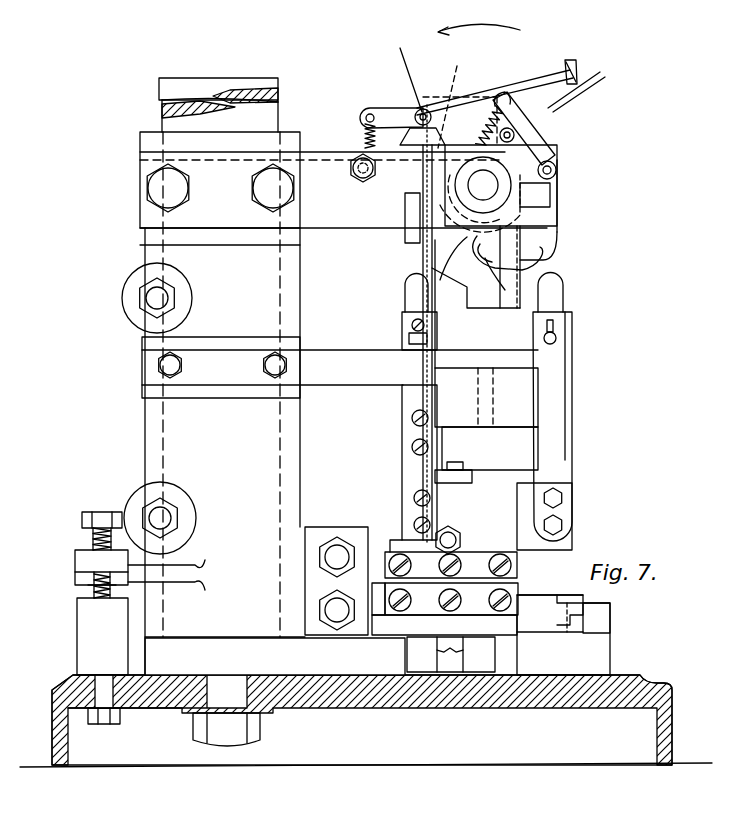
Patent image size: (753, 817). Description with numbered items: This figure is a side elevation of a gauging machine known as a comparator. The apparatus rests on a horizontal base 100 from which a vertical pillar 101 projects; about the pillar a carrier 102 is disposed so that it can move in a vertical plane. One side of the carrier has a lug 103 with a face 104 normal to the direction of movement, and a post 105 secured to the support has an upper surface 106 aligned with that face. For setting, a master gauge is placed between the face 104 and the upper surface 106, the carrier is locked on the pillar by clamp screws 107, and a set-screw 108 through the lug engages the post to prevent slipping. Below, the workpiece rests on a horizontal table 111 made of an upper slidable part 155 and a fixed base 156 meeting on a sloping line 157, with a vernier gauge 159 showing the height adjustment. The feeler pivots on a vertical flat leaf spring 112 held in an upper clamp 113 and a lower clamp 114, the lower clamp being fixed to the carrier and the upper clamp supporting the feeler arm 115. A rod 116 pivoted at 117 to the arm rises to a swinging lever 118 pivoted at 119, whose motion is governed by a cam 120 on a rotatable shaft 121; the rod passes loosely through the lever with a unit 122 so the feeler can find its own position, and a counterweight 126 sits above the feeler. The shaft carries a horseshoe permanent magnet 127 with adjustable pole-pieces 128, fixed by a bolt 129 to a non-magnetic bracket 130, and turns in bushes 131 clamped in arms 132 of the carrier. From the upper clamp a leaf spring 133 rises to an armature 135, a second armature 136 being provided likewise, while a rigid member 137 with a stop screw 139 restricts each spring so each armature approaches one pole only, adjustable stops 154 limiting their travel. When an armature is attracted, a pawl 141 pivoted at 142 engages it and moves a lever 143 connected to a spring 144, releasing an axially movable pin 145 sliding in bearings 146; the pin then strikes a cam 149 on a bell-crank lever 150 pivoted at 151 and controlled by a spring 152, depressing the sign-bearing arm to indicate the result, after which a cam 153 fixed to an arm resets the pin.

The horizontal base 100 is at (646, 680).
The vertical pillar 101 is at (279, 704).
The carrier 102 is at (172, 428).
The lug 103 is at (88, 560).
The face 104 is at (80, 587).
The post 105 is at (102, 646).
The upper surface 106 is at (90, 598).
The clamp screws 107 is at (152, 298).
The set-screw 108 is at (102, 512).
The horizontal table 111 is at (552, 598).
The flat leaf spring 112 is at (482, 580).
The clamp 113 is at (522, 555).
The clamp 114 is at (487, 612).
The arm 115 is at (462, 528).
The rod 116 is at (422, 272).
The pivot 117 is at (398, 540).
The swinging lever 118 is at (470, 140).
The pivot 119 is at (358, 182).
The cam 120 is at (516, 134).
The rotatable shaft 121 is at (484, 185).
The unit 122 is at (460, 95).
The counterweight 126 is at (472, 476).
The horseshoe permanent magnet 127 is at (430, 96).
The pole-pieces 128 is at (482, 288).
The bolt 129 is at (405, 228).
The bracket 130 is at (540, 262).
The bushes 131 is at (548, 212).
The arms 132 is at (540, 195).
The flat leaf spring 133 is at (418, 474).
The armature 135 is at (410, 292).
The armature 136 is at (556, 296).
The rigid member 137 is at (535, 403).
The stop screw 139 is at (557, 340).
The pawl 141 is at (548, 242).
The pivot 142 is at (558, 168).
The lever 143 is at (510, 142).
The spring 144 is at (513, 100).
The pin 145 is at (520, 120).
The bearings 146 is at (570, 94).
The cam 149 is at (450, 275).
The bell-crank lever 150 is at (412, 110).
The pivot 151 is at (403, 67).
The spring 152 is at (368, 145).
The cam 153 is at (506, 292).
The adjustable stops 154 is at (405, 340).
The upper slidable part 155 is at (580, 622).
The fixed base 156 is at (598, 662).
The line 157 is at (585, 645).
The vernier gauge 159 is at (567, 634).